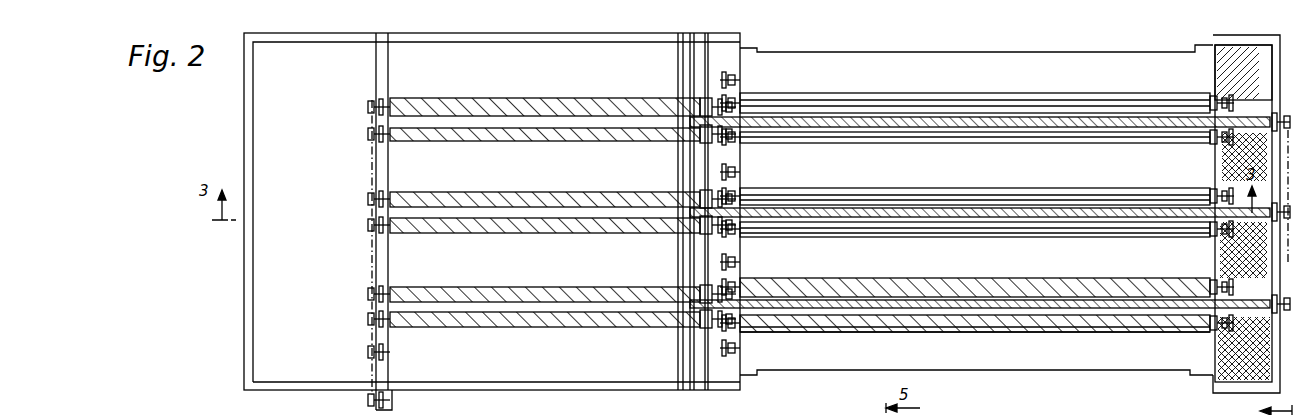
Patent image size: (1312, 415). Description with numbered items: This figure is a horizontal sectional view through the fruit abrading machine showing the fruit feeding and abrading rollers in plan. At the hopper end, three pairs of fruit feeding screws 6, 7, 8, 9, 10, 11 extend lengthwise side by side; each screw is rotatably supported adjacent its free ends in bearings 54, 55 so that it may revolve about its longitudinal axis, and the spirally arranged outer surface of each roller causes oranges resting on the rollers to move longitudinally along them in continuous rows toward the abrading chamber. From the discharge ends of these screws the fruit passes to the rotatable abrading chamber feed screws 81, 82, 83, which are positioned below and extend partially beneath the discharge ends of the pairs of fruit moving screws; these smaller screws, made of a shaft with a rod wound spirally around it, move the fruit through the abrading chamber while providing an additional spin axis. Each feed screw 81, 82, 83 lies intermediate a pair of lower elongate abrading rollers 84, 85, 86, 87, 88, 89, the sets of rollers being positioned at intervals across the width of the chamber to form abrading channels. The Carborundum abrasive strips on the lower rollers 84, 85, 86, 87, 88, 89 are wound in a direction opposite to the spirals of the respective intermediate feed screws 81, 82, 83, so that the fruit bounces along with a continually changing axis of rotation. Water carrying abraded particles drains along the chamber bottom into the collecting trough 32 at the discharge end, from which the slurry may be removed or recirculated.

The fruit feeding screw 6 is at (478, 327).
The fruit feeding screw 7 is at (492, 288).
The fruit feeding screw 8 is at (483, 233).
The fruit feeding screw 9 is at (488, 192).
The fruit feeding screw 10 is at (450, 137).
The fruit feeding screw 11 is at (480, 91).
The collecting trough 32 is at (1237, 50).
The bearing 54 is at (381, 102).
The bearing 55 is at (710, 95).
The abrading chamber feed screw 81 is at (787, 330).
The abrading chamber feed screw 82 is at (800, 205).
The abrading chamber feed screw 83 is at (783, 118).
The lower abrading roller 84 is at (845, 326).
The lower abrading roller 85 is at (797, 269).
The lower abrading roller 86 is at (850, 235).
The lower abrading roller 87 is at (955, 188).
The lower abrading roller 88 is at (850, 143).
The lower abrading roller 89 is at (860, 93).